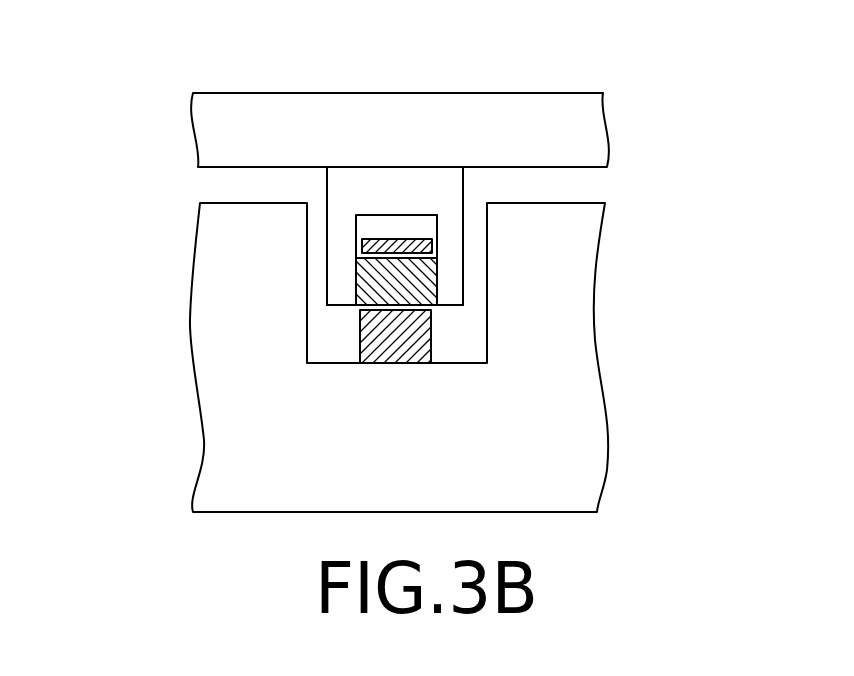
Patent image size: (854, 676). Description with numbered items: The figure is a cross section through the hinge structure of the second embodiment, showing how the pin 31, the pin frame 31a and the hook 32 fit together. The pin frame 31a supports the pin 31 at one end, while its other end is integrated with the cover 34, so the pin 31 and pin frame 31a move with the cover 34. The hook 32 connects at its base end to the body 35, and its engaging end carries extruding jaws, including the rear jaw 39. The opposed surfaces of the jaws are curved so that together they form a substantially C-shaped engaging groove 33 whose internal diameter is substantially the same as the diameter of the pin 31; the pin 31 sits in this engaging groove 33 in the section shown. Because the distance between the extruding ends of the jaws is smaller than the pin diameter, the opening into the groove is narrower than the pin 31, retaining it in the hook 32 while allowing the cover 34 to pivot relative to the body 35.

The cover 34 is at (455, 108).
The body 35 is at (237, 433).
The pin frame 31a is at (348, 182).
The pin 31 is at (370, 280).
The hook 32 is at (427, 328).
The engaging groove 33 is at (387, 307).
The rear jaw 39 is at (428, 250).